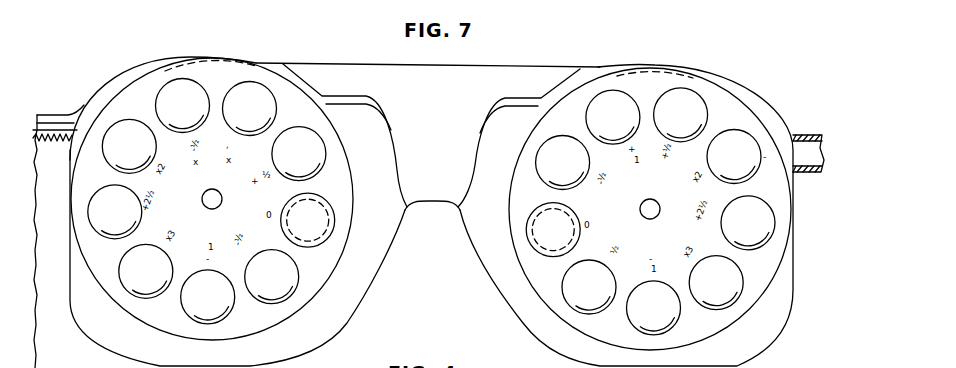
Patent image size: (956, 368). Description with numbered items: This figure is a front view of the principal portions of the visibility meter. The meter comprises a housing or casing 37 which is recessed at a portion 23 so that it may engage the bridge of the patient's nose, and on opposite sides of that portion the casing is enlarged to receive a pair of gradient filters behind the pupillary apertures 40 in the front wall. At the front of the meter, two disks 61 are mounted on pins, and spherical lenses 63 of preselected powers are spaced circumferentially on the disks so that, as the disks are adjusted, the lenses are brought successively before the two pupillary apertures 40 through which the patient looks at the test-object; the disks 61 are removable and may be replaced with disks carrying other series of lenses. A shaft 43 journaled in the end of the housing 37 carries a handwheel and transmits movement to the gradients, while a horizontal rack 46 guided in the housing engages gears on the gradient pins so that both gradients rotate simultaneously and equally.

The recessed portion 23 is at (427, 205).
The housing or casing 37 is at (512, 78).
The pupillary apertures 40 is at (323, 217).
The shaft 43 is at (803, 135).
The horizontal rack 46 is at (53, 137).
The disks 61 is at (717, 82).
The lenses 63 is at (188, 92).